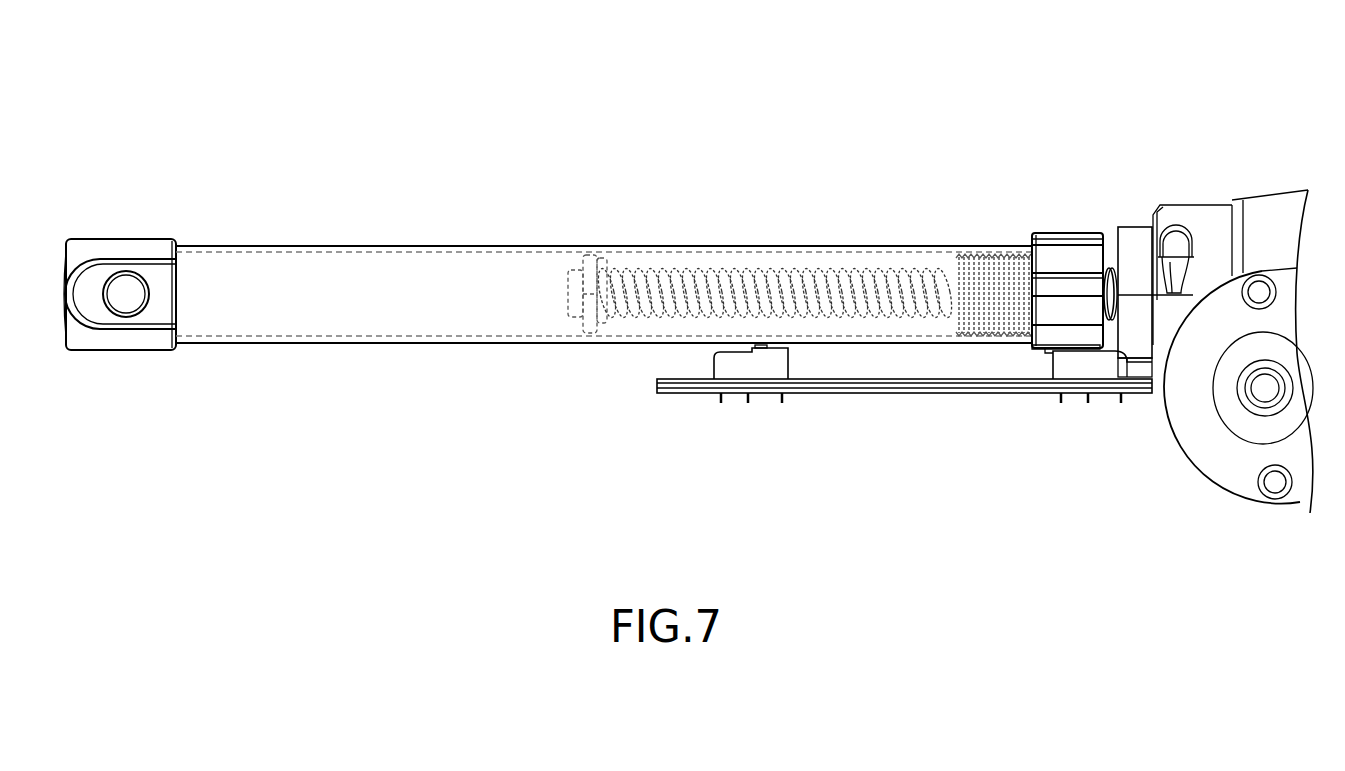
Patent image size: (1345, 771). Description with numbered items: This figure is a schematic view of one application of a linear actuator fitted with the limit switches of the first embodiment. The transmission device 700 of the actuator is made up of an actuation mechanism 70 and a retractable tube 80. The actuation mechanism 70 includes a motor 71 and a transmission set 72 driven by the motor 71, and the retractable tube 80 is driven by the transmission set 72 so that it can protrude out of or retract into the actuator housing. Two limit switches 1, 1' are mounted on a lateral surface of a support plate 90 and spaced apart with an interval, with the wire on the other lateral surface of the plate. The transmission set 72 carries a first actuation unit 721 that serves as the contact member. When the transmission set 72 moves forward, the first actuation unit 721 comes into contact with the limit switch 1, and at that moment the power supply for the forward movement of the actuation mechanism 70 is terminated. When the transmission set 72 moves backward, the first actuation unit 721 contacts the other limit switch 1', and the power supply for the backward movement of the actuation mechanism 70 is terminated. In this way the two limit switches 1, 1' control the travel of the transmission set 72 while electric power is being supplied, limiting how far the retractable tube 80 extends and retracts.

The transmission device 700 is at (805, 83).
The retractable tube 80 is at (783, 247).
The actuation mechanism 70 is at (1057, 122).
The transmission set 72 is at (1063, 226).
The first actuation unit 721 is at (1050, 347).
The motor 71 is at (1217, 313).
The support plate 90 is at (873, 383).
The limit switch 1 is at (751, 408).
The limit switch 1' is at (1102, 414).